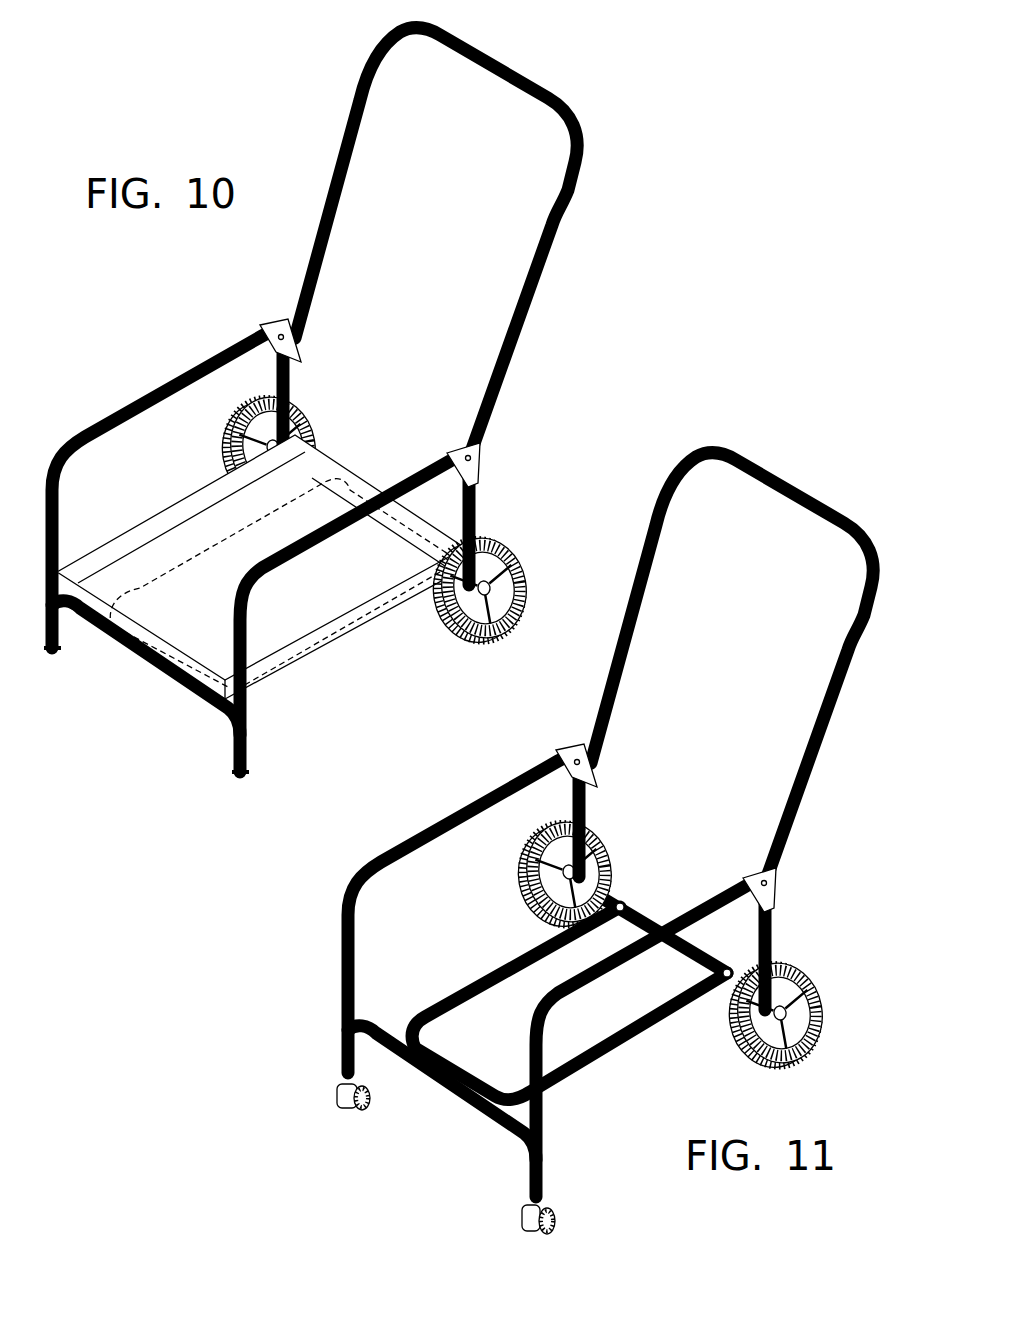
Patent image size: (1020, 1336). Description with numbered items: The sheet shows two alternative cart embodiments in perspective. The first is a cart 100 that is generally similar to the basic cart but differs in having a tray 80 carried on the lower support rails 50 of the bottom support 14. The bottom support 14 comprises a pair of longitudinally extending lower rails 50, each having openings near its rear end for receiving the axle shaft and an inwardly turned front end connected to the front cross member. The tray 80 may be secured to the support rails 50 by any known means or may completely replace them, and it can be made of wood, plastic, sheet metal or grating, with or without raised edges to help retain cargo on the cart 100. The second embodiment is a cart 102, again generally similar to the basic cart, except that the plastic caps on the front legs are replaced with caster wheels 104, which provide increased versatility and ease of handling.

In FIG. 10, the cart 100 is at (130, 392).
In FIG. 10, the lower rails 50 is at (214, 542).
In FIG. 10, the bottom support 14 is at (360, 616).
In FIG. 10, the tray 80 is at (400, 590).
In FIG. 11, the cart 102 is at (318, 1004).
In FIG. 11, the caster wheels 104 is at (355, 1118).